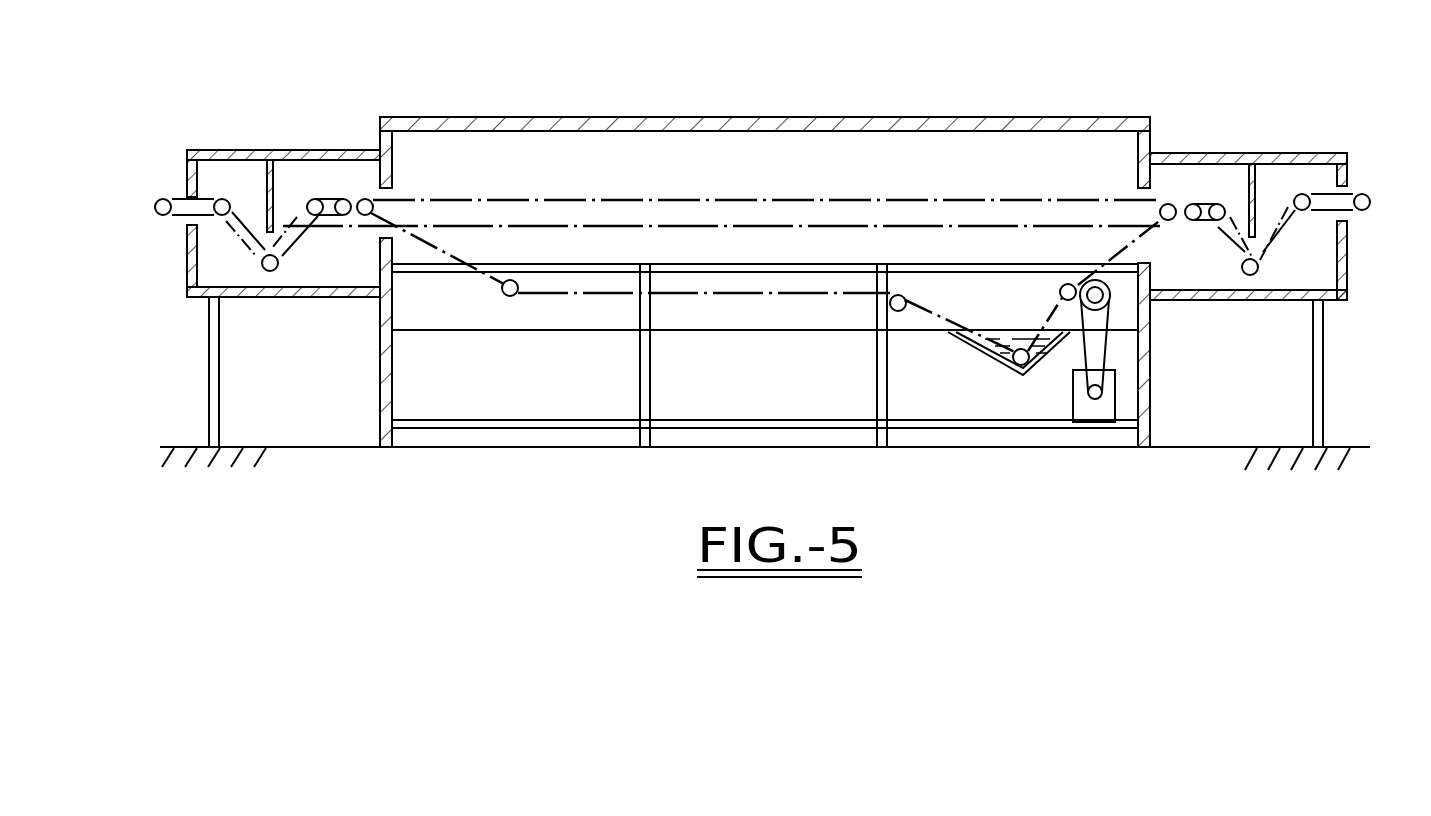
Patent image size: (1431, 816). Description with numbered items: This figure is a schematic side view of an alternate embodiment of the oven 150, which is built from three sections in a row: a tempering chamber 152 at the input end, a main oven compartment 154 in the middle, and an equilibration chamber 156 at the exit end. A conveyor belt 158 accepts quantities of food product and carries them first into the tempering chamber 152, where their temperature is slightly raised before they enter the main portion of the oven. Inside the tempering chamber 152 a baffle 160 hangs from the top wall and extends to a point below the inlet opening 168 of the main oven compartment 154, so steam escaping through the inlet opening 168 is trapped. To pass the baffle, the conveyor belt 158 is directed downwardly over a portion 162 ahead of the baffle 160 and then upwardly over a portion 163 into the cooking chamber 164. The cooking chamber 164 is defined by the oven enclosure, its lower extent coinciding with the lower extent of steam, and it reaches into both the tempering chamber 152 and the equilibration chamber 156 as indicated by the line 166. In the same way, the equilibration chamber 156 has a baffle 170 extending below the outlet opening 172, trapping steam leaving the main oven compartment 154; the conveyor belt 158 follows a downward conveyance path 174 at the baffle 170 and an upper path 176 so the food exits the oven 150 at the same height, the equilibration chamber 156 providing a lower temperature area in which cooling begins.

The oven 150 is at (590, 110).
The tempering chamber 152 is at (292, 145).
The main oven compartment 154 is at (945, 110).
The equilibration chamber 156 is at (1229, 146).
The conveyor belt 158 is at (162, 198).
The baffle 160 is at (266, 186).
The downward conveyor portion 162 is at (240, 238).
The upward conveyor portion 163 is at (280, 250).
The cooking chamber 164 is at (792, 148).
The steam level line 166 is at (762, 226).
The inlet opening 168 is at (366, 238).
The baffle 170 is at (1252, 188).
The outlet opening 172 is at (1130, 190).
The downward conveyance path 174 is at (1229, 258).
The upper path 176 is at (1282, 247).